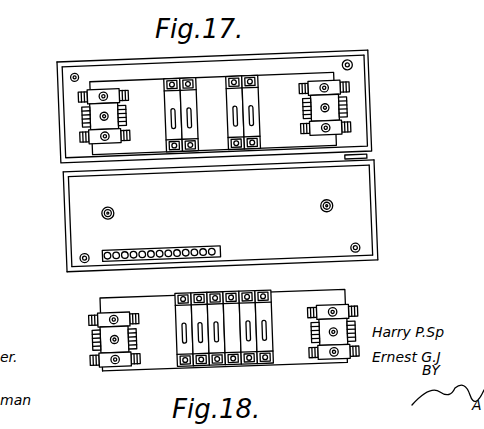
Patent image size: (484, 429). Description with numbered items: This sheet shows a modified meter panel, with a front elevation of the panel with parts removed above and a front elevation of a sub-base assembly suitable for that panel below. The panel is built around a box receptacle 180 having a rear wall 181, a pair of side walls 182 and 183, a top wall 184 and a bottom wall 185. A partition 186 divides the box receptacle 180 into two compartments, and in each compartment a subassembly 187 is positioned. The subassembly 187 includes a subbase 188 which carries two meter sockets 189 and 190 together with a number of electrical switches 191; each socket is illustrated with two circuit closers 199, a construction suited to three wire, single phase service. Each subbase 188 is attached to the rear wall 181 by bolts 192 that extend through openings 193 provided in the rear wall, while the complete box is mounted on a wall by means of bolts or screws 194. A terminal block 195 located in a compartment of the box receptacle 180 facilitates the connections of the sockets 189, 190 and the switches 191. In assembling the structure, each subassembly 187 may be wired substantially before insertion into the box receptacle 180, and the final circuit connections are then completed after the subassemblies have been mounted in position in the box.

In FIG. 17, the box receptacle 180 is at (425, 115).
In FIG. 17, the rear wall 181 is at (364, 185).
In FIG. 17, the side wall 182 is at (63, 227).
In FIG. 17, the side wall 183 is at (376, 213).
In FIG. 17, the top wall 184 is at (322, 52).
In FIG. 17, the bottom wall 185 is at (355, 262).
In FIG. 17, the partition 186 is at (348, 157).
In FIG. 17, the subassembly 187 is at (269, 83).
In FIG. 18, the subassembly 187 is at (292, 358).
In FIG. 18, the subbase 188 is at (107, 304).
In FIG. 18, the meter socket 189 is at (92, 352).
In FIG. 18, the meter socket 190 is at (359, 343).
In FIG. 18, the electrical switches 191 is at (178, 352).
In FIG. 17, the bolts 192 is at (81, 117).
In FIG. 17, the openings 193 is at (113, 208).
In FIG. 17, the bolts or screws 194 is at (353, 66).
In FIG. 17, the terminal block 195 is at (158, 248).
In FIG. 17, the circuit closers 199 is at (347, 105).
In FIG. 18, the circuit closers 199 is at (357, 325).